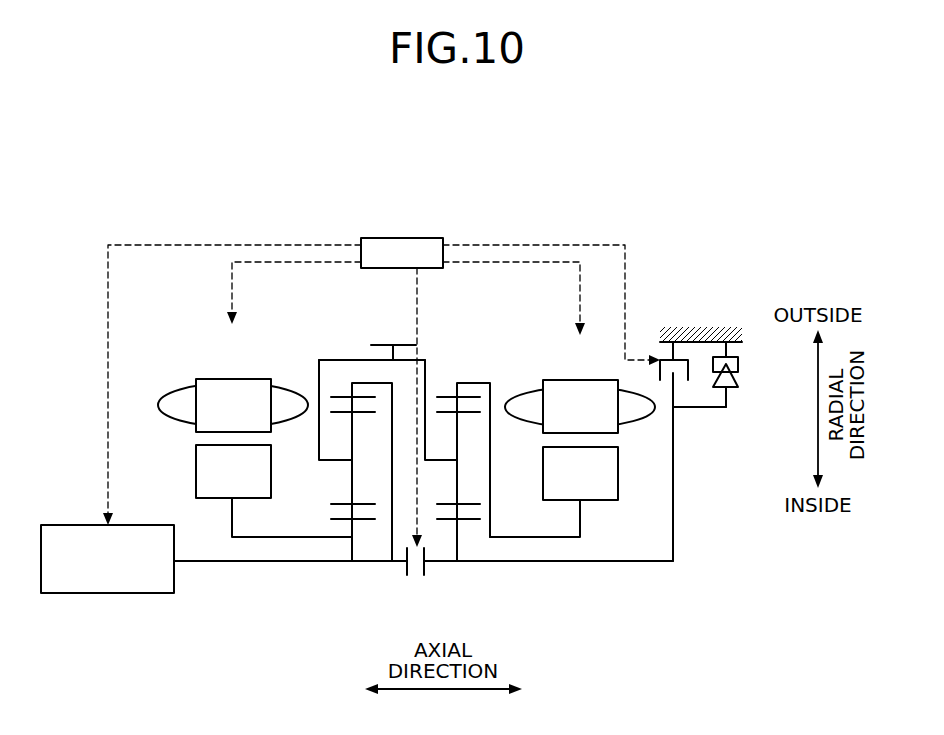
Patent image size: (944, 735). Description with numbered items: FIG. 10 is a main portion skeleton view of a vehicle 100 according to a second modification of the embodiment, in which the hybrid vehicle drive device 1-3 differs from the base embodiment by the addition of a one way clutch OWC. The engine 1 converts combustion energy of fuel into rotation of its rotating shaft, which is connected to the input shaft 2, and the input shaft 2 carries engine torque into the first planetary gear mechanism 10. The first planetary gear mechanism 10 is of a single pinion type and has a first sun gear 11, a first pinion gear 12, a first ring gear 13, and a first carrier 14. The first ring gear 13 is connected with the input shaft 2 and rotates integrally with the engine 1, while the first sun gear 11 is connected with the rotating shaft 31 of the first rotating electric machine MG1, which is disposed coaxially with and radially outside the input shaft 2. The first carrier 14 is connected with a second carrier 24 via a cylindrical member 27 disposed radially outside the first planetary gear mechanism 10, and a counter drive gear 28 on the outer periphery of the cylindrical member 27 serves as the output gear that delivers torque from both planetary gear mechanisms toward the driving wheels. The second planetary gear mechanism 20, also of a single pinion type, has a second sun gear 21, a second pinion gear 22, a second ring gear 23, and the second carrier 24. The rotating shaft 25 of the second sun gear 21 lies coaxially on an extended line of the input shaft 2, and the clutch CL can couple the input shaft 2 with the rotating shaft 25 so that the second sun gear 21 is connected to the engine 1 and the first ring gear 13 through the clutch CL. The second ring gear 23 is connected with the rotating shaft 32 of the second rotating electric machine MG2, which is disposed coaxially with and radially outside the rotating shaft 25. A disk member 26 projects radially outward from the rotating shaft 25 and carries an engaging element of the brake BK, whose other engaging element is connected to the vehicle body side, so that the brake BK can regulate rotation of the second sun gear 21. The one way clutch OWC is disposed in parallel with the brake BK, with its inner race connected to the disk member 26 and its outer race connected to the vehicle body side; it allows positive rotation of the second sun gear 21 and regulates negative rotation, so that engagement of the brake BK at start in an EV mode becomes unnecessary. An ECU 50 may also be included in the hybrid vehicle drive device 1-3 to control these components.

The vehicle 100 is at (212, 173).
The hybrid vehicle drive device 1-3 is at (340, 207).
The engine 1 is at (135, 525).
The input shaft 2 is at (208, 566).
The ECU 50 is at (417, 238).
The first planetary gear mechanism 10 is at (355, 368).
The first sun gear 11 is at (340, 518).
The first pinion gear 12 is at (340, 504).
The first ring gear 13 is at (338, 398).
The first carrier 14 is at (330, 460).
The cylindrical member 27 is at (330, 360).
The counter drive gear 28 is at (384, 344).
The rotating shaft 31 is at (252, 538).
The second planetary gear mechanism 20 is at (448, 368).
The second sun gear 21 is at (440, 516).
The second pinion gear 22 is at (472, 505).
The second ring gear 23 is at (470, 400).
The second carrier 24 is at (438, 459).
The rotating shaft 25 is at (608, 561).
The disk member 26 is at (680, 458).
The rotating shaft 32 is at (516, 537).
The first rotating electric machine MG1 is at (230, 379).
The second rotating electric machine MG2 is at (578, 380).
The clutch CL is at (390, 572).
The brake BK is at (652, 340).
The one way clutch OWC is at (752, 360).